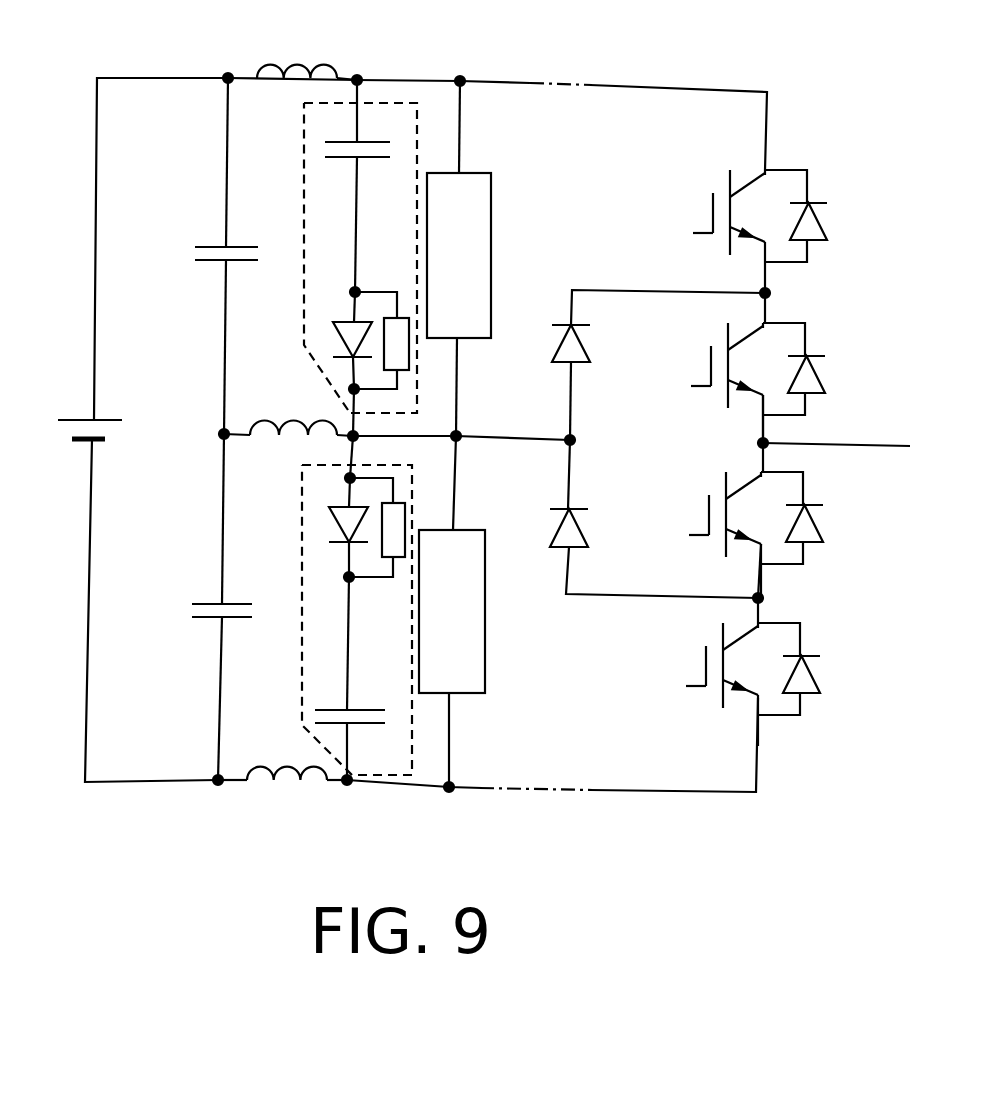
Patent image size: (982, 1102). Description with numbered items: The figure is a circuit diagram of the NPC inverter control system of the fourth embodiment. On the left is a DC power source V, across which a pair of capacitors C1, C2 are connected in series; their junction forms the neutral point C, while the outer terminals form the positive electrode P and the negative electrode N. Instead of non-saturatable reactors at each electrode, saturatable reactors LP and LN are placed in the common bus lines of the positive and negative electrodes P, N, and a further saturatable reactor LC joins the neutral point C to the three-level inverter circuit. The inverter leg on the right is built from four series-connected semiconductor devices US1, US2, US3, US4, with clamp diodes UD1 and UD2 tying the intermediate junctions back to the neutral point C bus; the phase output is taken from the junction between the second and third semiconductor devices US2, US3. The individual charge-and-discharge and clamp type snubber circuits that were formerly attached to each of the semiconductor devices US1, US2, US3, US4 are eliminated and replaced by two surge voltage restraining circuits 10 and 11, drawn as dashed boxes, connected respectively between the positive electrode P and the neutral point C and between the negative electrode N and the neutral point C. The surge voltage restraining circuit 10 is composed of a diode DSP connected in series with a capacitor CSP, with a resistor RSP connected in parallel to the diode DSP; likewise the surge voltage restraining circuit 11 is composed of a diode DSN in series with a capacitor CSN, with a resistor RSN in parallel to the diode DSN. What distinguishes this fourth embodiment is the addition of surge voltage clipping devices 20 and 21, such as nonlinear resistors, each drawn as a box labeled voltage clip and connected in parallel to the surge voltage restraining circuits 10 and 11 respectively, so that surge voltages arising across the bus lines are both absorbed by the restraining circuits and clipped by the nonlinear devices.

The surge voltage restraining circuit 10 is at (305, 195).
The surge voltage restraining circuit 11 is at (300, 668).
The surge voltage clipping device 20 is at (480, 172).
The surge voltage clipping device 21 is at (474, 528).
The DC power source V is at (75, 434).
The capacitor C1 is at (205, 256).
The capacitor C2 is at (200, 607).
The positive electrode P is at (214, 93).
The neutral point C is at (206, 434).
The negative electrode N is at (199, 762).
The saturatable reactor LP is at (307, 52).
The saturatable reactor LC is at (288, 408).
The saturatable reactor LN is at (282, 798).
The capacitor CSP is at (381, 186).
The diode DSP is at (323, 361).
The resistor RSP is at (405, 347).
The capacitor CSN is at (374, 678).
The diode DSN is at (314, 509).
The resistor RSN is at (401, 524).
The clamp diode UD1 is at (657, 346).
The clamp diode UD2 is at (653, 539).
The semiconductor device US1 is at (735, 234).
The semiconductor device US2 is at (734, 370).
The semiconductor device US3 is at (733, 523).
The semiconductor device US4 is at (731, 672).